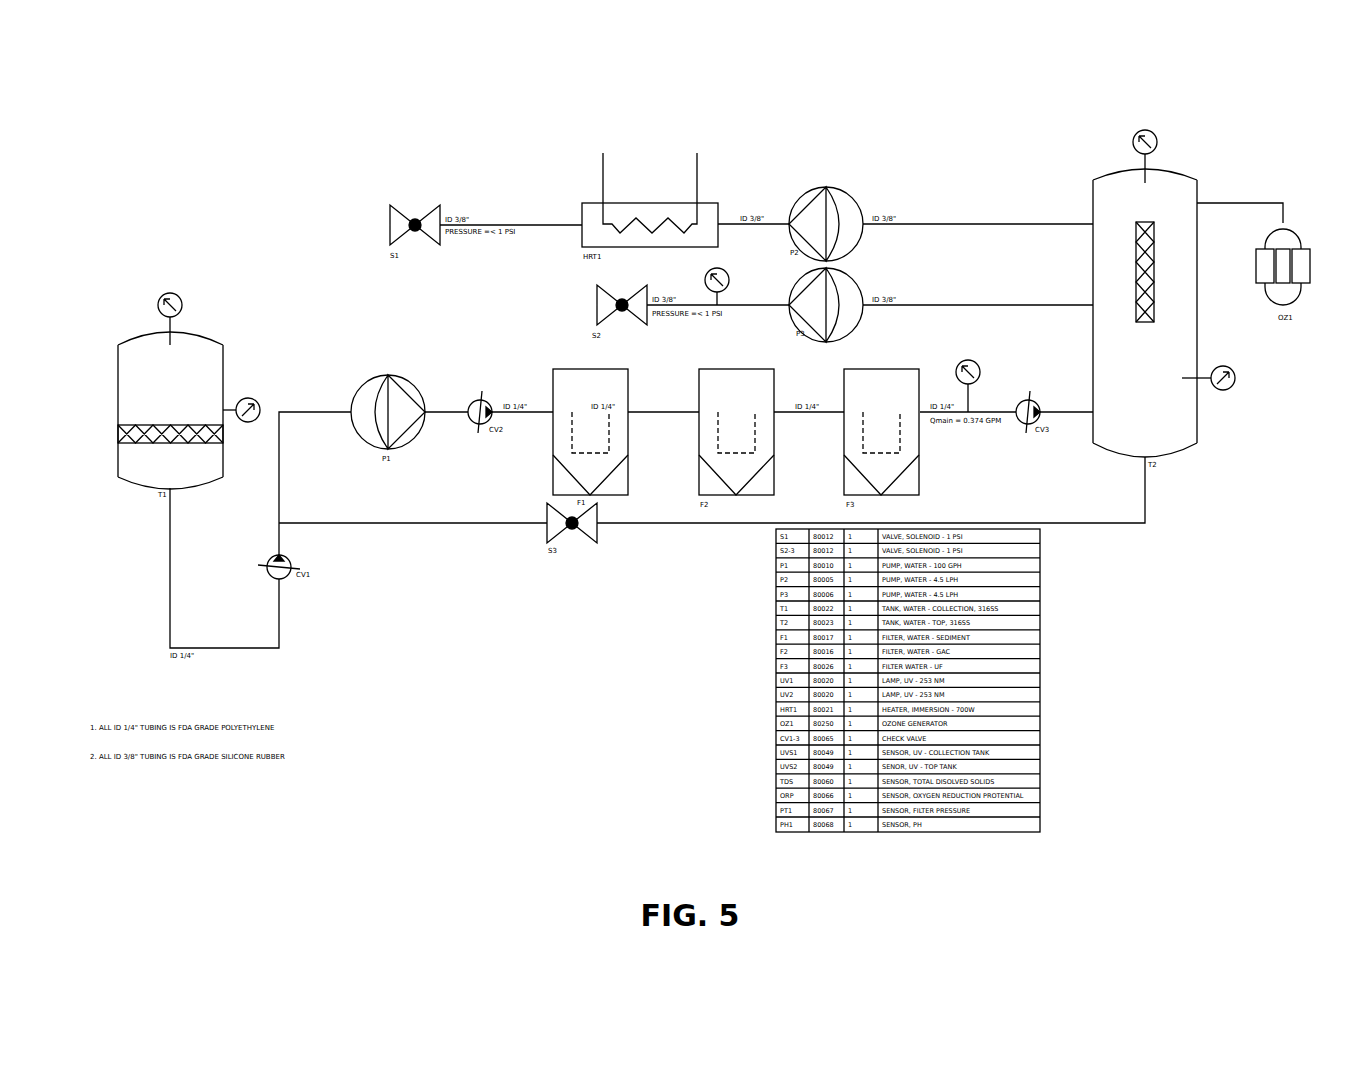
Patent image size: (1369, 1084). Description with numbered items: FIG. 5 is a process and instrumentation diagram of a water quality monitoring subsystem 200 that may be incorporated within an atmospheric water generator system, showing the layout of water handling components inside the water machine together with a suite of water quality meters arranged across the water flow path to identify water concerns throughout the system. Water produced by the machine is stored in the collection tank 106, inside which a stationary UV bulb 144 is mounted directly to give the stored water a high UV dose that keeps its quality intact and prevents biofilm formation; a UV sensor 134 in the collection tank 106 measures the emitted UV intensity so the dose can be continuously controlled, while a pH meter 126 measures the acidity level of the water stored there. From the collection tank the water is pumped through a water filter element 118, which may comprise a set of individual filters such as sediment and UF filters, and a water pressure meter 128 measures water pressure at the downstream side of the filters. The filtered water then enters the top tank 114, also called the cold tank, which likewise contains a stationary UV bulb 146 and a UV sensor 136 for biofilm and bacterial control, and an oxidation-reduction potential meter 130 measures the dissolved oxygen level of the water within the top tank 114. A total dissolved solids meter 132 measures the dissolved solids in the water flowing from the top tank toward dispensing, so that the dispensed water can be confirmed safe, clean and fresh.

The water treatment system 200 is at (276, 186).
The collection tank 106 is at (152, 391).
The top tank 114 is at (1127, 420).
The water filter element 118 is at (573, 401).
The pH meter 126 is at (258, 380).
The water pressure meter 128 is at (987, 364).
The ORP meter 130 is at (1232, 400).
The TDS meter 132 is at (735, 277).
The UV sensor 134 is at (188, 293).
The UV sensor 136 is at (1165, 124).
The UV bulb 144 is at (193, 450).
The UV bulb 146 is at (1136, 237).